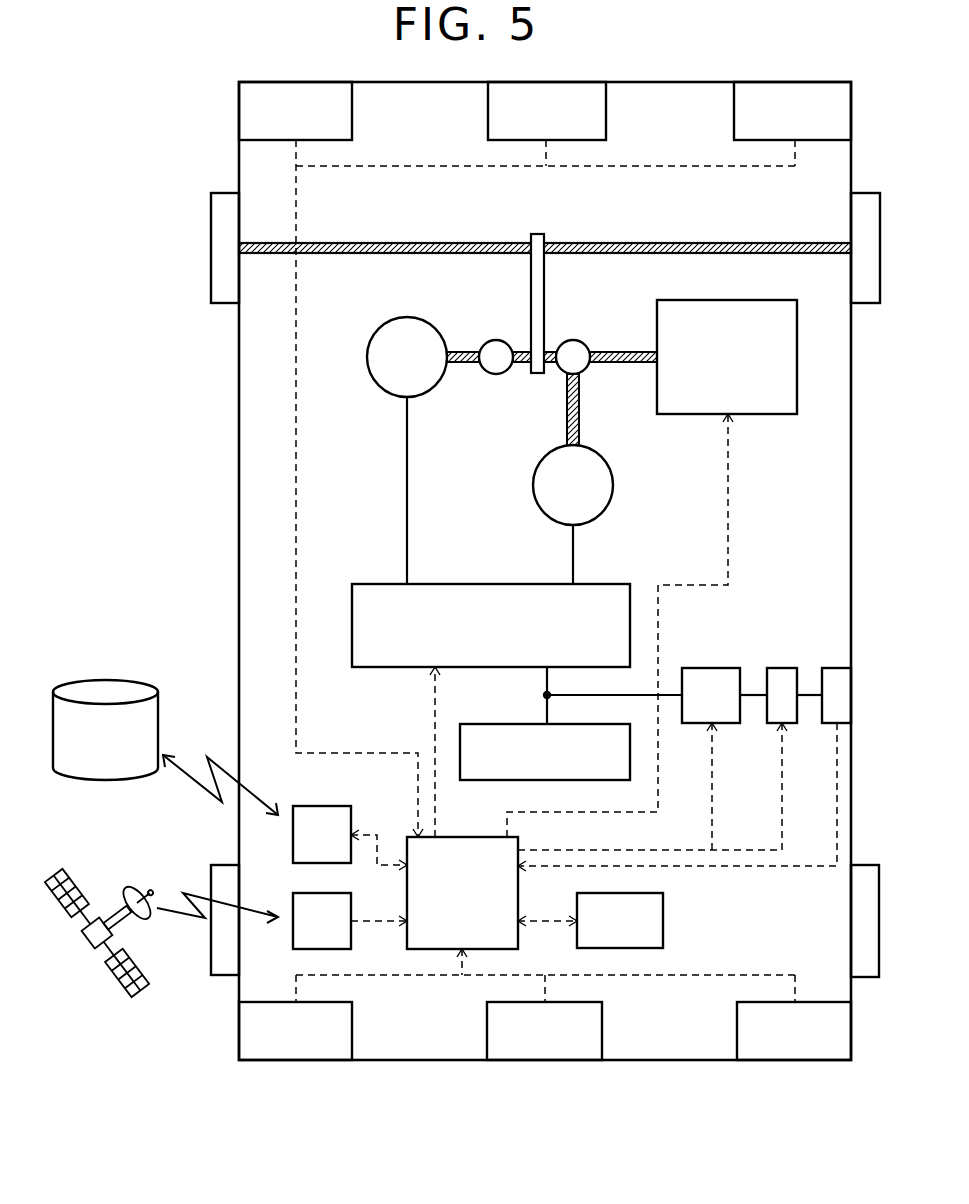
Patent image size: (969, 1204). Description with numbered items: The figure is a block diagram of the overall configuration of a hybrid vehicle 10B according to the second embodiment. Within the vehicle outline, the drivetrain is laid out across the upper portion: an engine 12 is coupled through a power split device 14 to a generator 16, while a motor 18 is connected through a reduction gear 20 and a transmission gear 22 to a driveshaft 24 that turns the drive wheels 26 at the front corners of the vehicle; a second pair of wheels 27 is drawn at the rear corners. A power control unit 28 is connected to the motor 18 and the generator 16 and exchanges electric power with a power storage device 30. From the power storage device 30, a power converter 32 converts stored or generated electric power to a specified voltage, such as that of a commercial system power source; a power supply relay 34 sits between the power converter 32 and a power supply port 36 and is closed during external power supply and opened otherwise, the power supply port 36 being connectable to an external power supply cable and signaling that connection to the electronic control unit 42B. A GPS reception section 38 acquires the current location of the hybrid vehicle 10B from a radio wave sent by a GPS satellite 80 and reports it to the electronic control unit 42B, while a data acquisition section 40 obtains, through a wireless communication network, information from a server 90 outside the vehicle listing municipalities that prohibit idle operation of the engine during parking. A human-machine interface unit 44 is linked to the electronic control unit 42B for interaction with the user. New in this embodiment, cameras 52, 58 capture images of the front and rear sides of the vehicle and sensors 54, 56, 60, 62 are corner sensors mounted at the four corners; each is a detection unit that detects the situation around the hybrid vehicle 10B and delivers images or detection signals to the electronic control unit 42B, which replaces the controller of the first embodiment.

The hybrid vehicle 10B is at (238, 493).
The engine 12 is at (752, 299).
The power split device 14 is at (589, 341).
The generator 16 is at (614, 482).
The motor 18 is at (412, 317).
The reduction gear 20 is at (495, 339).
The transmission gear 22 is at (532, 233).
The driveshaft 24 is at (410, 243).
The drive wheels 26 is at (225, 192).
The rear wheels 27 is at (227, 864).
The power control unit 28 is at (488, 583).
The power storage device 30 is at (520, 723).
The power converter 32 is at (711, 667).
The power supply relay 34 is at (781, 667).
The power supply port 36 is at (834, 667).
The GPS reception section 38 is at (320, 892).
The data acquisition section 40 is at (320, 805).
The electronic control unit 42B is at (470, 836).
The human-machine interface unit 44 is at (664, 920).
The camera 52 is at (607, 111).
The sensor 54 is at (733, 111).
The sensor 56 is at (353, 111).
The camera 58 is at (603, 1030).
The sensor 60 is at (736, 1031).
The sensor 62 is at (353, 1030).
The GPS satellite 80 is at (93, 972).
The server 90 is at (130, 673).